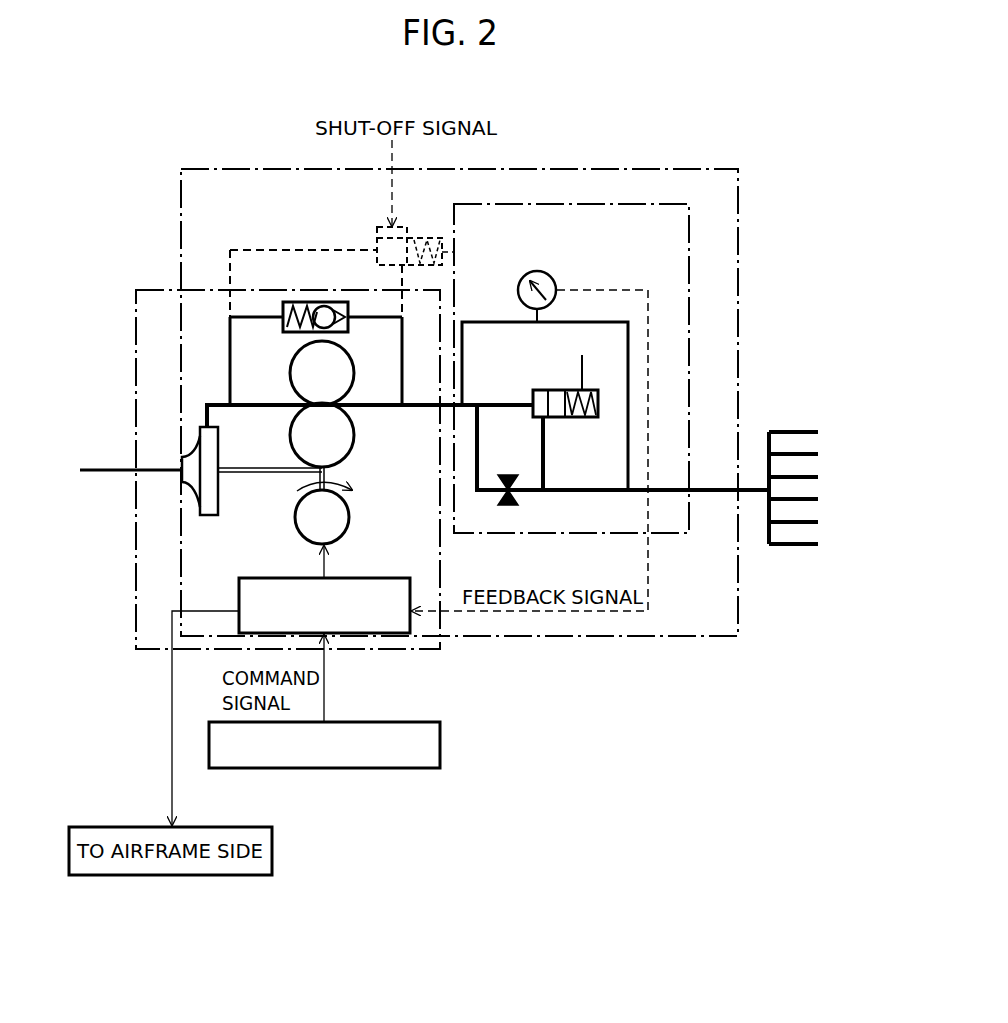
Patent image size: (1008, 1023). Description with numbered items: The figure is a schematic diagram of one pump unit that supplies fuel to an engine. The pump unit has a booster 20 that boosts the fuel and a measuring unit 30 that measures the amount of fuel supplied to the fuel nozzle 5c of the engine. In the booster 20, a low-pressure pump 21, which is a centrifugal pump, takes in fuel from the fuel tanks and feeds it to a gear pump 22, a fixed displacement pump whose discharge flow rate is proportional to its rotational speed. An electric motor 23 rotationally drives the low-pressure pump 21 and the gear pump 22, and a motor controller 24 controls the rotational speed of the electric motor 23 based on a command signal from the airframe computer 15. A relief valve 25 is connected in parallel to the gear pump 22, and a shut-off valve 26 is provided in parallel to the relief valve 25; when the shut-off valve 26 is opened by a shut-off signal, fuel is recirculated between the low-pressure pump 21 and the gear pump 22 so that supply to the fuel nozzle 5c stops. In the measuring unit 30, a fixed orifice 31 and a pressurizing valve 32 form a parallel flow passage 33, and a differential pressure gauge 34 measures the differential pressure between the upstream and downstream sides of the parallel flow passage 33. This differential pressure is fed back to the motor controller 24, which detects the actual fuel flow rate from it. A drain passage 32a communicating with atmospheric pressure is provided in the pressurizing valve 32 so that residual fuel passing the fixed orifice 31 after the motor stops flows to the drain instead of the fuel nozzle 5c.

The fuel nozzle 5c is at (813, 485).
The airframe computer 15 is at (357, 768).
The booster 20 is at (137, 591).
The low-pressure pump 21 is at (200, 505).
The gear pump 22 is at (348, 452).
The electric motor 23 is at (297, 520).
The motor controller 24 is at (258, 578).
The relief valve 25 is at (338, 331).
The shut-off valve 26 is at (420, 227).
The measuring unit 30 is at (738, 613).
The fixed orifice 31 is at (510, 475).
The pressurizing valve 32 is at (575, 417).
The drain passage 32a is at (582, 370).
The parallel flow passage 33 is at (531, 506).
The differential pressure gauge 34 is at (557, 288).